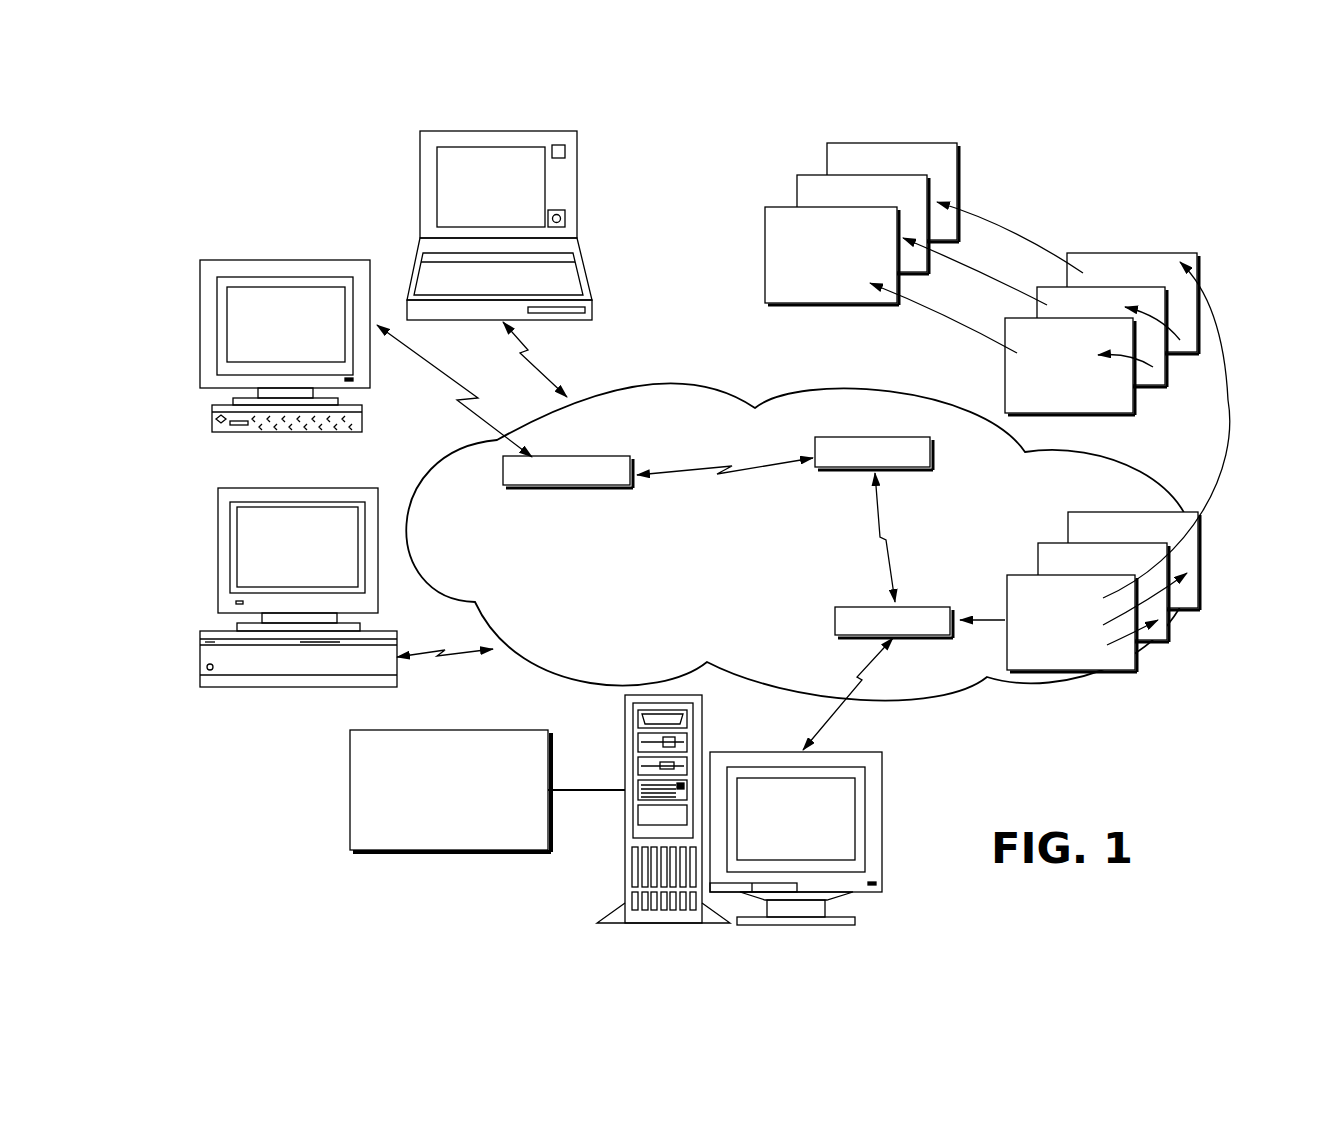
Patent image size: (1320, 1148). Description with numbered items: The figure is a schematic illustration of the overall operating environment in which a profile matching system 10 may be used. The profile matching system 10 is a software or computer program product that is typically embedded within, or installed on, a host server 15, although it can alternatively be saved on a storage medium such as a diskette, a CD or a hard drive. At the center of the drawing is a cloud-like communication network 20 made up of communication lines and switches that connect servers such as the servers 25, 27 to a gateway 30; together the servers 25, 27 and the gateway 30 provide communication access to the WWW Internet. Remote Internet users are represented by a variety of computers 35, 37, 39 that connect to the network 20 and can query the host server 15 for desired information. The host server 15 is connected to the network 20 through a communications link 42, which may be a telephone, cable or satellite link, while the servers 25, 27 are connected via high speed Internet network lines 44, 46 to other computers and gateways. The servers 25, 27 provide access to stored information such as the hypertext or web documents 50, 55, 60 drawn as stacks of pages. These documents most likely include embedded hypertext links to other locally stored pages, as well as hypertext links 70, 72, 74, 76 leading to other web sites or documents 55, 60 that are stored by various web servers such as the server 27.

The profile matching system 10 is at (350, 768).
The host server 15 is at (625, 738).
The communication network 20 is at (680, 387).
The server 25 is at (875, 606).
The server 27 is at (890, 437).
The gateway 30 is at (568, 490).
The computer 35 is at (588, 272).
The computer 37 is at (343, 261).
The computer 39 is at (343, 488).
The communications link 42 is at (812, 737).
The high speed Internet network line 44 is at (887, 560).
The high speed Internet network line 46 is at (712, 470).
The hypertext documents 50 is at (1207, 582).
The hypertext documents 55 is at (1207, 278).
The hypertext documents 60 is at (780, 190).
The hypertext link 70 is at (1228, 432).
The hypertext link 72 is at (1026, 238).
The hypertext link 74 is at (991, 272).
The hypertext link 76 is at (947, 313).